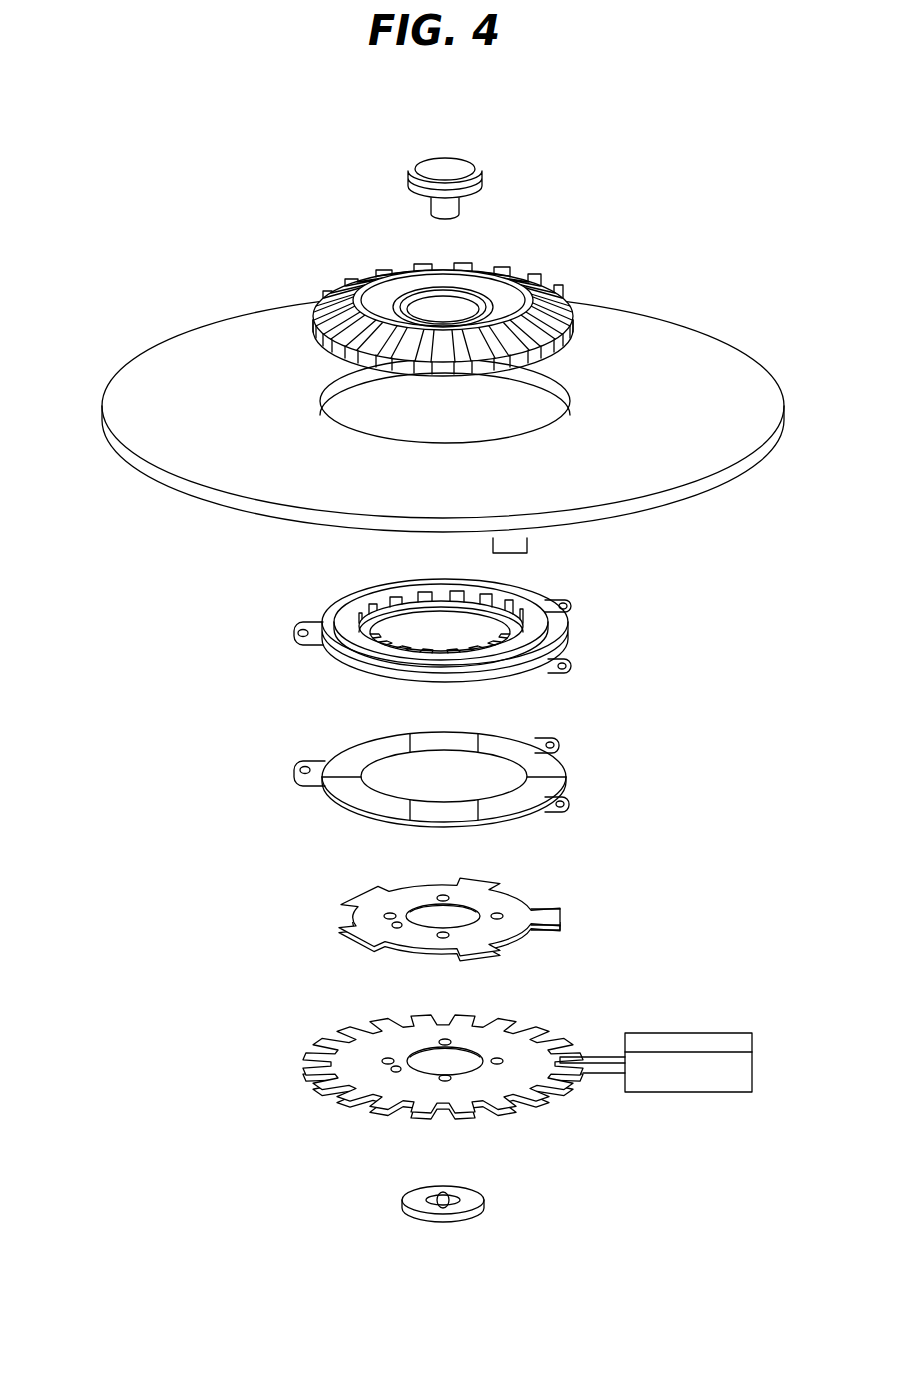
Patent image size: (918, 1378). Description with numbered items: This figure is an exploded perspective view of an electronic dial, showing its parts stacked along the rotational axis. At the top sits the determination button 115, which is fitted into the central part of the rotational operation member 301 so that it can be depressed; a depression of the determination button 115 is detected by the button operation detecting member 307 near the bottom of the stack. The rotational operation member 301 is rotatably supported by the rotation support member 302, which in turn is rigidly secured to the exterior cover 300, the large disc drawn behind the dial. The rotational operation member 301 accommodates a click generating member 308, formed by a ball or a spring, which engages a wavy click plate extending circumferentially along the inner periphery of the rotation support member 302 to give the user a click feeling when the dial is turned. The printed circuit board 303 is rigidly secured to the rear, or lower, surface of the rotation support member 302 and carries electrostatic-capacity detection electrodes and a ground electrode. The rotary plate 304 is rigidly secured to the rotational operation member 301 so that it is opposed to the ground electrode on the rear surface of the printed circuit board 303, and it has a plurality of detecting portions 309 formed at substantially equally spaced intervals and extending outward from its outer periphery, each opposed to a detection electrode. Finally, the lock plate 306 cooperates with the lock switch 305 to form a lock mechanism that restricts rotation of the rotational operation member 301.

The determination button 115 is at (430, 163).
The exterior cover 300 is at (142, 377).
The rotational operation member 301 is at (383, 297).
The rotation support member 302 is at (347, 612).
The printed circuit board 303 is at (340, 762).
The rotary plate 304 is at (395, 900).
The lock switch 305 is at (730, 1033).
The lock plate 306 is at (365, 1045).
The button operation detecting member 307 is at (418, 1200).
The click generating member 308 is at (527, 541).
The detecting portions 309 is at (553, 908).